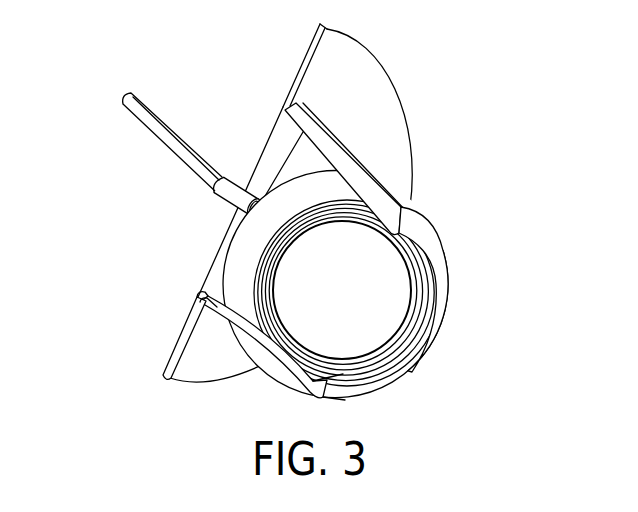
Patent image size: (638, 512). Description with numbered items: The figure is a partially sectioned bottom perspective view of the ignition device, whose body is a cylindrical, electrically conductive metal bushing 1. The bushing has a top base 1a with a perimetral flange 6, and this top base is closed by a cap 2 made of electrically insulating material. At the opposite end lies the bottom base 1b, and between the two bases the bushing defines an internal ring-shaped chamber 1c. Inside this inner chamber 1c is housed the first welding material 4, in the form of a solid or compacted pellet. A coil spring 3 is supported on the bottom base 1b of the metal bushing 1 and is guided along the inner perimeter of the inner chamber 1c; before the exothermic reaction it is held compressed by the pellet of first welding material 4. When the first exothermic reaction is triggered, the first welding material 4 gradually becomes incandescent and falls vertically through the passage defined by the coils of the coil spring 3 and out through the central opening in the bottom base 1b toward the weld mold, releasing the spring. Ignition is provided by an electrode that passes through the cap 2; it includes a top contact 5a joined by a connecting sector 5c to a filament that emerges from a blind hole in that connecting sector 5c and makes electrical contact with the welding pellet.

The metal bushing 1 is at (376, 178).
The top base 1a is at (203, 293).
The bottom base 1b is at (440, 258).
The internal ring-shaped chamber 1c is at (310, 160).
The cap 2 is at (268, 158).
The coil spring 3 is at (263, 333).
The first welding material 4 is at (246, 309).
The top contact 5a is at (140, 121).
The connecting sector 5c is at (227, 188).
The perimetral flange 6 is at (357, 85).